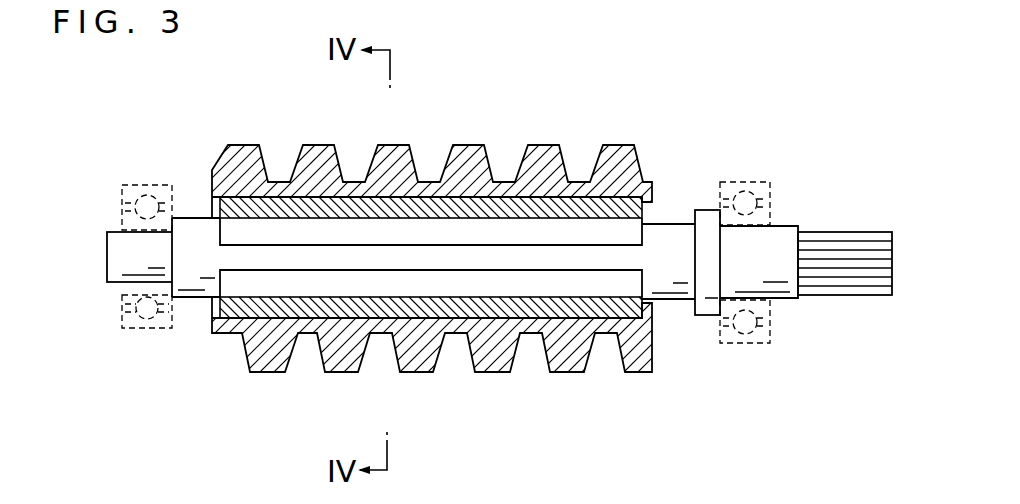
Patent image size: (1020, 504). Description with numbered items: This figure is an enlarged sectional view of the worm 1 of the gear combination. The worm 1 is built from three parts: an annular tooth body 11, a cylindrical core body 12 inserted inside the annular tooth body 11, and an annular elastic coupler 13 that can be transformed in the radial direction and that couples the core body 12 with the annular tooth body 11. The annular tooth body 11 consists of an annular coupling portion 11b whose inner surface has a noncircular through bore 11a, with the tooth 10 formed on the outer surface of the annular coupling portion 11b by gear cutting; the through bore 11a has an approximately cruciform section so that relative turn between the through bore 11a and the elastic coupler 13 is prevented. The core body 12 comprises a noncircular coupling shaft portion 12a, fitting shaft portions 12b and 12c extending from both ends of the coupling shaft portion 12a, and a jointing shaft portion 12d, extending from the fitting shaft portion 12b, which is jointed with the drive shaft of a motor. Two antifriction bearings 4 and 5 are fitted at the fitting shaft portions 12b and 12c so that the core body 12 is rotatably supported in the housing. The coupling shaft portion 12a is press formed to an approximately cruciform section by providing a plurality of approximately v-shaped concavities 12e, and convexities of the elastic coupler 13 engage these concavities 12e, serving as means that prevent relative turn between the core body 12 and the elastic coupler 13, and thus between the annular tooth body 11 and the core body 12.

The worm 1 is at (618, 132).
The antifriction bearing 4 is at (742, 343).
The antifriction bearing 5 is at (147, 330).
The tooth 10 is at (495, 373).
The annular tooth body 11 is at (427, 259).
The through bore 11a is at (511, 190).
The annular coupling portion 11b is at (425, 190).
The core body 12 is at (320, 283).
The coupling shaft portion 12a is at (314, 257).
The fitting shaft portion 12b is at (783, 240).
The fitting shaft portion 12c is at (115, 240).
The jointing shaft portion 12d is at (833, 242).
The concavity 12e is at (273, 228).
The elastic coupler 13 is at (413, 317).